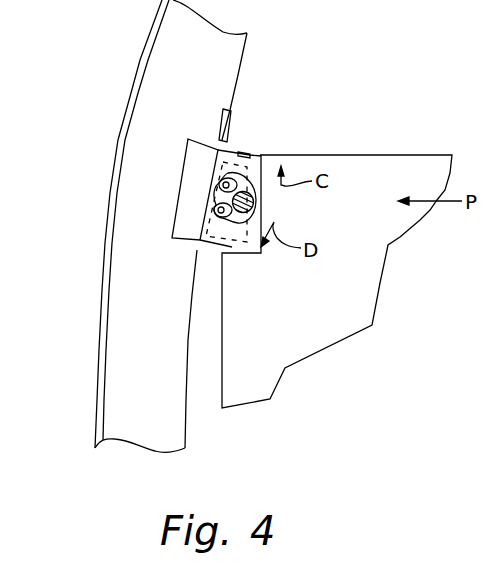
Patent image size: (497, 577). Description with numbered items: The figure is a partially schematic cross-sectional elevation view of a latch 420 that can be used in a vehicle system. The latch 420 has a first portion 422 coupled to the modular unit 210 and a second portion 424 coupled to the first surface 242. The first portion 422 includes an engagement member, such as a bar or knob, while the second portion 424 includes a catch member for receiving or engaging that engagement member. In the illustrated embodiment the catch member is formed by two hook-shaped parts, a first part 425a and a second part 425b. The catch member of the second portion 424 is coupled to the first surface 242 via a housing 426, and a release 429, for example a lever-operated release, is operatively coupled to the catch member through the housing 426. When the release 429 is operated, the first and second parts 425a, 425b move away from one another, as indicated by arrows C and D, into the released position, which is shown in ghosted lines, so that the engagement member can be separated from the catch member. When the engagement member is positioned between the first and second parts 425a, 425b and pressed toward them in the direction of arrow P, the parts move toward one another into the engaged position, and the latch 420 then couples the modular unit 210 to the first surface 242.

The modular unit 210 is at (412, 172).
The first surface 242 is at (160, 100).
The latch 420 is at (207, 266).
The first portion 422 is at (254, 202).
The second portion 424 is at (230, 248).
The first part 425a is at (236, 178).
The second part 425b is at (230, 222).
The housing 426 is at (250, 151).
The release 429 is at (237, 104).